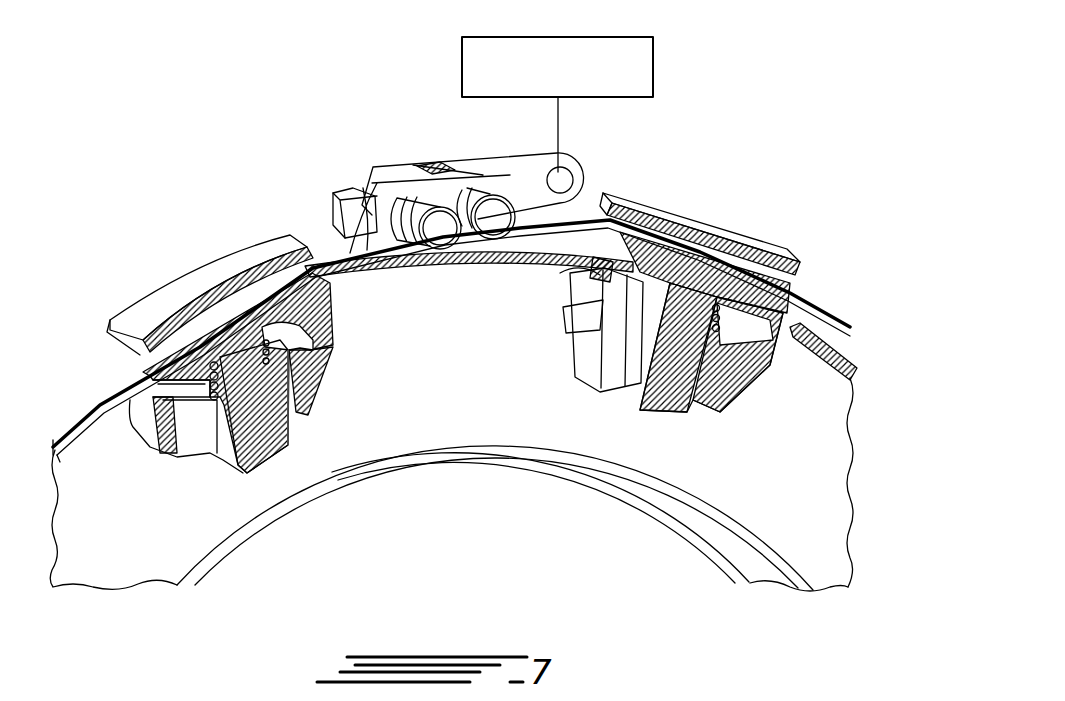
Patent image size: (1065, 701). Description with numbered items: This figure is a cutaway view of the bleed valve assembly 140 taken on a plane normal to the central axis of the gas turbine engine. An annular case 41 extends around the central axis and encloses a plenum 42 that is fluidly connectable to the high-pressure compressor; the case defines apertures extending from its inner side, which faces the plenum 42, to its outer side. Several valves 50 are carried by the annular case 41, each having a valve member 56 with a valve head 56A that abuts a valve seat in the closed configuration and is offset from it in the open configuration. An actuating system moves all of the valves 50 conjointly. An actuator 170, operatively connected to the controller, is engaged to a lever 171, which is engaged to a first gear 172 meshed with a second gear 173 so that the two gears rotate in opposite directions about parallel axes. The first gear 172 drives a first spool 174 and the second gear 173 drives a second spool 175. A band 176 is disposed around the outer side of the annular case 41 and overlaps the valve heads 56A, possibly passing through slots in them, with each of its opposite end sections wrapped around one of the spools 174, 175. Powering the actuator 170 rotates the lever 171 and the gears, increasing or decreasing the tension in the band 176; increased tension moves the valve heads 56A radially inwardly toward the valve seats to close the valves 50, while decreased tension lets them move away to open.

The annular case 41 is at (200, 573).
The plenum 42 is at (152, 526).
The valve 50 is at (448, 328).
The valve member 56 is at (108, 333).
The valve head 56A is at (650, 420).
The bleed valve assembly 140 is at (842, 167).
The actuator 170 is at (654, 68).
The lever 171 is at (513, 180).
The first gear 172 is at (438, 168).
The second gear 173 is at (363, 170).
The first spool 174 is at (493, 222).
The second spool 175 is at (440, 232).
The band 176 is at (88, 401).